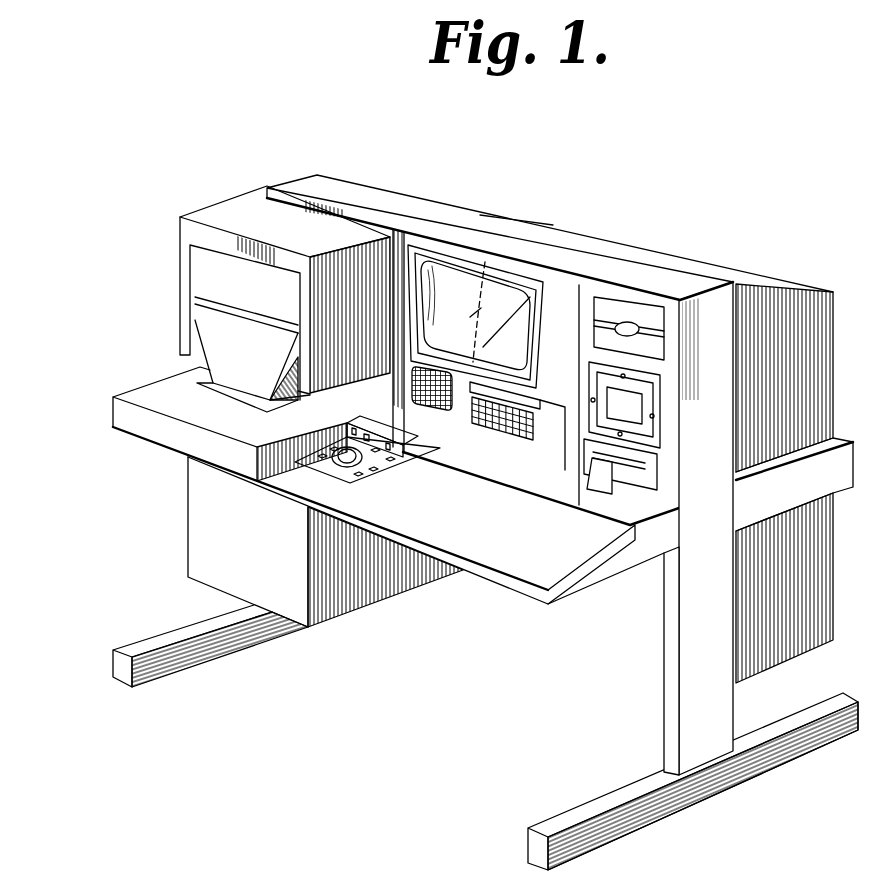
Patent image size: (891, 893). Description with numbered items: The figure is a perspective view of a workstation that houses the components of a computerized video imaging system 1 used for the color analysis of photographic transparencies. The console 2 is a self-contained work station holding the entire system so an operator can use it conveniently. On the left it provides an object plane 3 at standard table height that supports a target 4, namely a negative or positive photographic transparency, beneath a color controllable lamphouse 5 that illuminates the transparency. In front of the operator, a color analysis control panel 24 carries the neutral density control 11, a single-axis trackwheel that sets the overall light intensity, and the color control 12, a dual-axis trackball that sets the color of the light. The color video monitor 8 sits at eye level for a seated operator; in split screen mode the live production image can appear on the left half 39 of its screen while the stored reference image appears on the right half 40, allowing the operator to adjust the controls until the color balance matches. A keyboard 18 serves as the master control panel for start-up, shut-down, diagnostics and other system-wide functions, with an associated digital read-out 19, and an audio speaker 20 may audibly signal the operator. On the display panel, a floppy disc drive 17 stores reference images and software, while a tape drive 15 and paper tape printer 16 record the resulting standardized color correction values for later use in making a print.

The computerized video imaging system 1 is at (718, 229).
The console 2 is at (857, 440).
The object plane 3 is at (134, 390).
The target 4 is at (245, 398).
The color controllable lamphouse 5 is at (200, 274).
The color video monitor 8 is at (505, 283).
The neutral density control 11 is at (367, 442).
The color control 12 is at (341, 452).
The magnetic tape drive 15 is at (633, 413).
The paper tape printer 16 is at (639, 482).
The floppy disc drive 17 is at (640, 317).
The keyboard 18 is at (520, 430).
The digital read-out 19 is at (530, 400).
The audio speaker 20 is at (438, 400).
The color analysis control panel 24 is at (367, 463).
The left half of the screen 39 is at (455, 273).
The right half of the screen 40 is at (527, 317).